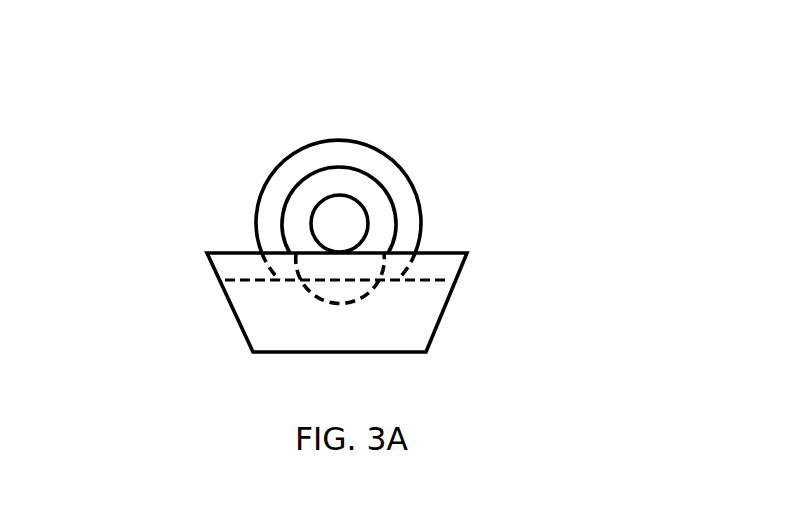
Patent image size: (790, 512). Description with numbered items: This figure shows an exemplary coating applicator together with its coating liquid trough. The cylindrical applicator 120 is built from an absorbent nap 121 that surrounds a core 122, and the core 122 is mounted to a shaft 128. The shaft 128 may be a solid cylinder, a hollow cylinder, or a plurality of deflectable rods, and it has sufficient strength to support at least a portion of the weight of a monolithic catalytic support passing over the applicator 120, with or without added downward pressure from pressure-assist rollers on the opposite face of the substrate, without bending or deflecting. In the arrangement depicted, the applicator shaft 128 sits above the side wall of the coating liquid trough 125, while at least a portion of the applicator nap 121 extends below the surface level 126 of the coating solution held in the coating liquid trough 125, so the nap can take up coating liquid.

The cylindrical applicator 120 is at (306, 116).
The absorbent nap 121 is at (270, 217).
The core 122 is at (388, 229).
The shaft 128 is at (342, 215).
The coating liquid trough 125 is at (387, 334).
The surface level 126 is at (258, 280).